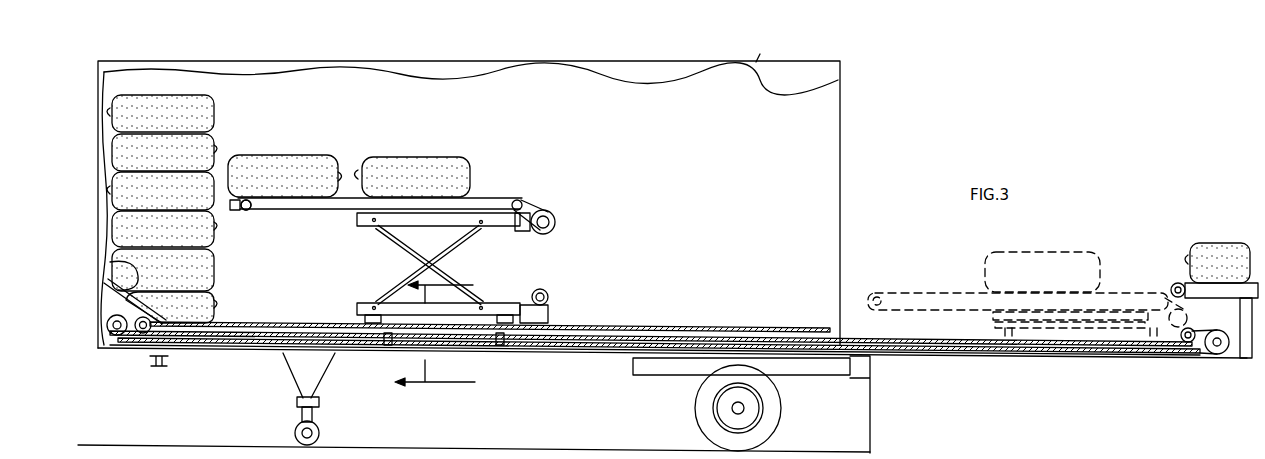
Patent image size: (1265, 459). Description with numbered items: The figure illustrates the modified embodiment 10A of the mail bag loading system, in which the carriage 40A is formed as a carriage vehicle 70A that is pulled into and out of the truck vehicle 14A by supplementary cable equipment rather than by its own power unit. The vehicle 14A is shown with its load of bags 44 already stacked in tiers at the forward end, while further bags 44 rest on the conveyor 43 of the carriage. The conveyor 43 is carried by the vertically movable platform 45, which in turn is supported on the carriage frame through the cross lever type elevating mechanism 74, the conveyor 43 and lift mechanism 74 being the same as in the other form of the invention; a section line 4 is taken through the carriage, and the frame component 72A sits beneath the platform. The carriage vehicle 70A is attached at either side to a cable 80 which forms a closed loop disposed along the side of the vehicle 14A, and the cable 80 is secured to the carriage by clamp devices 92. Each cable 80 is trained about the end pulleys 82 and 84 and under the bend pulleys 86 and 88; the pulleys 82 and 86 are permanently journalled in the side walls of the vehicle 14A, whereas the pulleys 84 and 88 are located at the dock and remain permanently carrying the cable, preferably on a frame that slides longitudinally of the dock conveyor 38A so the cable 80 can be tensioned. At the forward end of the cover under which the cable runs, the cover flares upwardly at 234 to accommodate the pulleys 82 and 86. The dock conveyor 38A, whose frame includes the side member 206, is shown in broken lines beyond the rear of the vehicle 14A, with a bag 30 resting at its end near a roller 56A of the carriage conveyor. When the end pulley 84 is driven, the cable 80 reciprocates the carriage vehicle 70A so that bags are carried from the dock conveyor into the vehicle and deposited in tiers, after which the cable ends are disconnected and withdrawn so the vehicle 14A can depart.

The embodiment 10A is at (120, 56).
The vehicle 14A is at (765, 50).
The bags 44 is at (203, 150).
The upwardly flared portion of cover 234 is at (110, 262).
The end pulley 82 is at (115, 335).
The bend pulley 86 is at (142, 334).
The cable 80 is at (598, 352).
The clamp devices 92 is at (386, 350).
The conveyor 43 is at (498, 195).
The carriage 40A is at (564, 213).
The conveyor roller 56A is at (237, 212).
The platform 45 is at (362, 226).
The elevating mechanism 74 is at (452, 266).
The carriage vehicle 70A is at (474, 268).
The lift actuator 72A is at (554, 311).
The section line 4- 4 is at (441, 334).
The conveyor 38A is at (901, 304).
The side member 206 is at (1176, 284).
The bag 30 is at (1207, 268).
The bend pulley 88 is at (1190, 343).
The end pulley 84 is at (1216, 355).